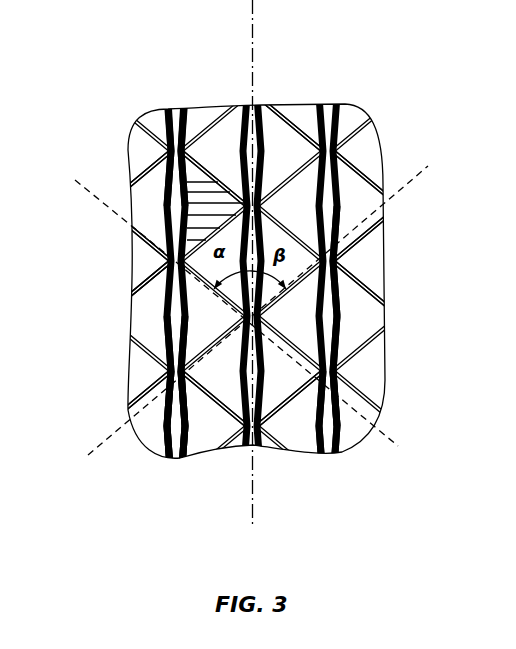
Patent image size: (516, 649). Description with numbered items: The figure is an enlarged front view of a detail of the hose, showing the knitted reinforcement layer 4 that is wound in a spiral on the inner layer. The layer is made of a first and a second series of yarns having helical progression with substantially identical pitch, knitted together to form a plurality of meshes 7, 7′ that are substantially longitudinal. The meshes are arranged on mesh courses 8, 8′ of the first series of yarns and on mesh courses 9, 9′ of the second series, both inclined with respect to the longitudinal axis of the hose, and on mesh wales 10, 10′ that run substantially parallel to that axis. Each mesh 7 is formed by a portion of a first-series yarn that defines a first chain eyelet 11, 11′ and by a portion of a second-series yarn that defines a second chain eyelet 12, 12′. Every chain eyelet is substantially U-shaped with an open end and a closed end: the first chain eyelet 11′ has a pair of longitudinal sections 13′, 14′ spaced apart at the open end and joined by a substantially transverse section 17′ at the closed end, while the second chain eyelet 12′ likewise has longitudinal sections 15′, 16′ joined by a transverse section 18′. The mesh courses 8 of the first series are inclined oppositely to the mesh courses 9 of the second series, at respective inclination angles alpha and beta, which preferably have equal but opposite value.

The knitted reinforcement layer 4 is at (120, 105).
The mesh 7 is at (333, 294).
The mesh 7′ is at (340, 186).
The mesh course 8 is at (396, 184).
The mesh course 8′ is at (388, 245).
The mesh course 9 is at (90, 160).
The mesh course 9′ is at (80, 257).
The mesh wale 10 is at (175, 106).
The mesh wale 10′ is at (258, 105).
The first chain eyelet 11 is at (349, 331).
The first chain eyelet 11′ is at (348, 228).
The second chain eyelet 12 is at (349, 361).
The second chain eyelet 12′ is at (374, 116).
The longitudinal section 13′ is at (168, 180).
The longitudinal section 14′ is at (188, 203).
The longitudinal section 15′ is at (172, 257).
The longitudinal section 16′ is at (170, 277).
The transverse section 17′ is at (144, 139).
The transverse section 18′ is at (200, 143).